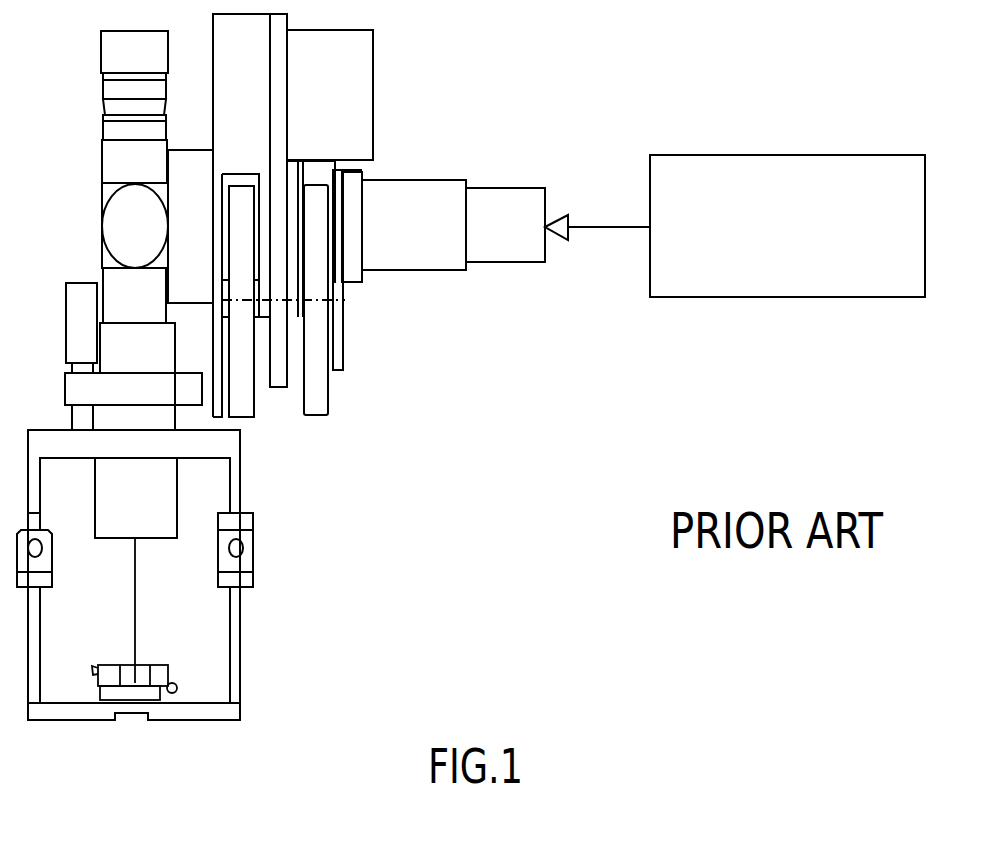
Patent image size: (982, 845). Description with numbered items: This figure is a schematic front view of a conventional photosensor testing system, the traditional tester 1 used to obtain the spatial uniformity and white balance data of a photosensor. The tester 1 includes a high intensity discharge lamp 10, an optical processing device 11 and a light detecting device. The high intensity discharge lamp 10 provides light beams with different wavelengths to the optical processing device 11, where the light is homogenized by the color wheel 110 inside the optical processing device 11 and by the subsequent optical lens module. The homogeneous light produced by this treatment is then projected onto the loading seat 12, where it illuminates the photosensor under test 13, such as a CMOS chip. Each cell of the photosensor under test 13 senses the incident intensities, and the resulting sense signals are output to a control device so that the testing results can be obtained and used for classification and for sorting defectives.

The tester 1 is at (327, 497).
The high intensity discharge lamp 10 is at (692, 282).
The optical processing device 11 is at (373, 91).
The color wheel 110 is at (320, 405).
The loading seat 12 is at (160, 665).
The photosensor under test 13 is at (140, 672).